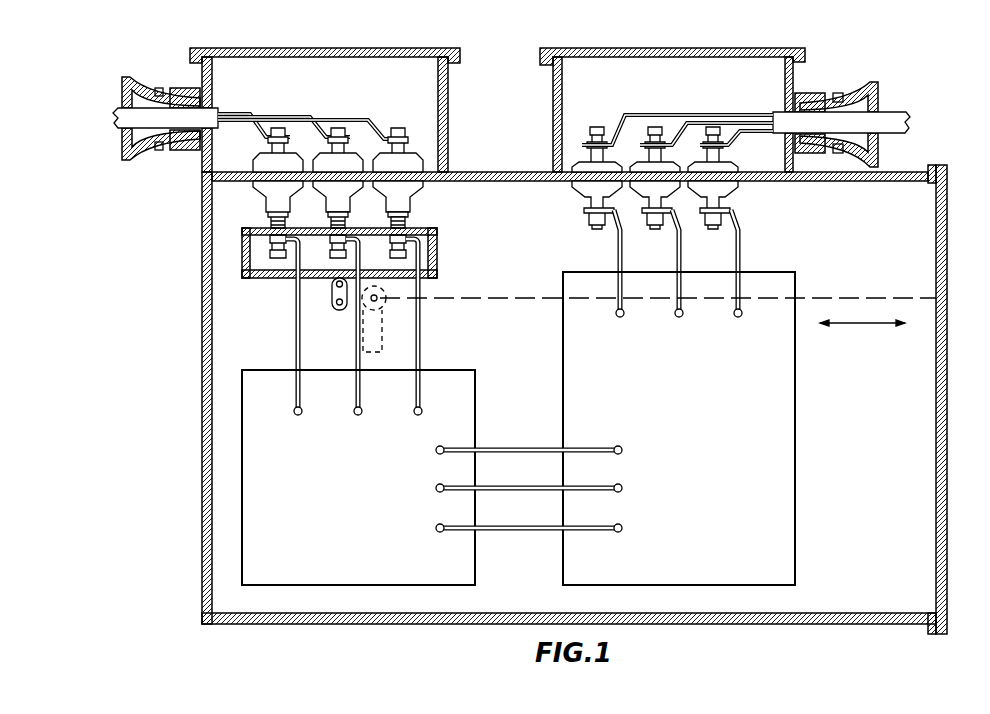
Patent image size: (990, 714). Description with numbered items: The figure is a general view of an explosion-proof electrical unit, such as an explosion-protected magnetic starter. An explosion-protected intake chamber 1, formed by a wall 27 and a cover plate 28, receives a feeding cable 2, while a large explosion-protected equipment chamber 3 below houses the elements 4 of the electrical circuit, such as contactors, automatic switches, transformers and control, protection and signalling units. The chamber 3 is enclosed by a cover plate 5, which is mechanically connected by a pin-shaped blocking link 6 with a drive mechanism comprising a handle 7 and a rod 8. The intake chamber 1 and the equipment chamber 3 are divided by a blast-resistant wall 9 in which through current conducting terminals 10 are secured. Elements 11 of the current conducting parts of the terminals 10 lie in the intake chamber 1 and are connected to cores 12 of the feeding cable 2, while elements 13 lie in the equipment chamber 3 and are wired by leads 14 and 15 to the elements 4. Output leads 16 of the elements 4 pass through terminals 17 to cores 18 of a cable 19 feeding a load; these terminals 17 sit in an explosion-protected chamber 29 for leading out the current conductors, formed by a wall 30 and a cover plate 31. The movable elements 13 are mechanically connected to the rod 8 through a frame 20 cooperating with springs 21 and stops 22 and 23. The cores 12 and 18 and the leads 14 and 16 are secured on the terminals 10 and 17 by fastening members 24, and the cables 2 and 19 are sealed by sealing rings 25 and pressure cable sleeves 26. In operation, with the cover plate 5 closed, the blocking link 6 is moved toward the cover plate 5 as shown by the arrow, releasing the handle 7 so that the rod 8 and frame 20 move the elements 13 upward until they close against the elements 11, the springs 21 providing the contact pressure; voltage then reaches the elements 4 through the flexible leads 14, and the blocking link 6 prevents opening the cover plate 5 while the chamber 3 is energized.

The explosion-protected intake chamber 1 is at (338, 91).
The feeding cable 2 is at (115, 108).
The explosion-protected equipment chamber 3 is at (575, 399).
The elements of the electrical circuit 4 is at (518, 428).
The cover plate 5 is at (948, 487).
The blocking link 6 is at (912, 298).
The handle 7 is at (380, 333).
The rod 8 is at (333, 302).
The blast-resistant wall 9 is at (205, 177).
The through current conducting terminals 10 is at (414, 170).
The elements of the current conducting parts of the through terminals 11 is at (349, 170).
The cores of the feeding cable 12 is at (262, 110).
The elements of the current conducting parts of the through terminals 13 is at (272, 203).
The leads 14 is at (418, 392).
The leads 15 is at (618, 455).
The output leads 16 is at (743, 258).
The through terminals 17 is at (617, 147).
The cores of the cable 18 is at (750, 117).
The cable 19 is at (893, 118).
The frame 20 is at (323, 253).
The springs 21 is at (403, 227).
The stop 22 is at (412, 213).
The stop 23 is at (242, 240).
The fastening members 24 is at (352, 248).
The sealing rings 25 is at (190, 90).
The pressure cable sleeves 26 is at (135, 88).
The wall 27 is at (448, 85).
The cover plate 28 is at (242, 50).
The explosion-protected chamber 29 is at (661, 92).
The wall 30 is at (553, 95).
The cover plate 31 is at (703, 50).